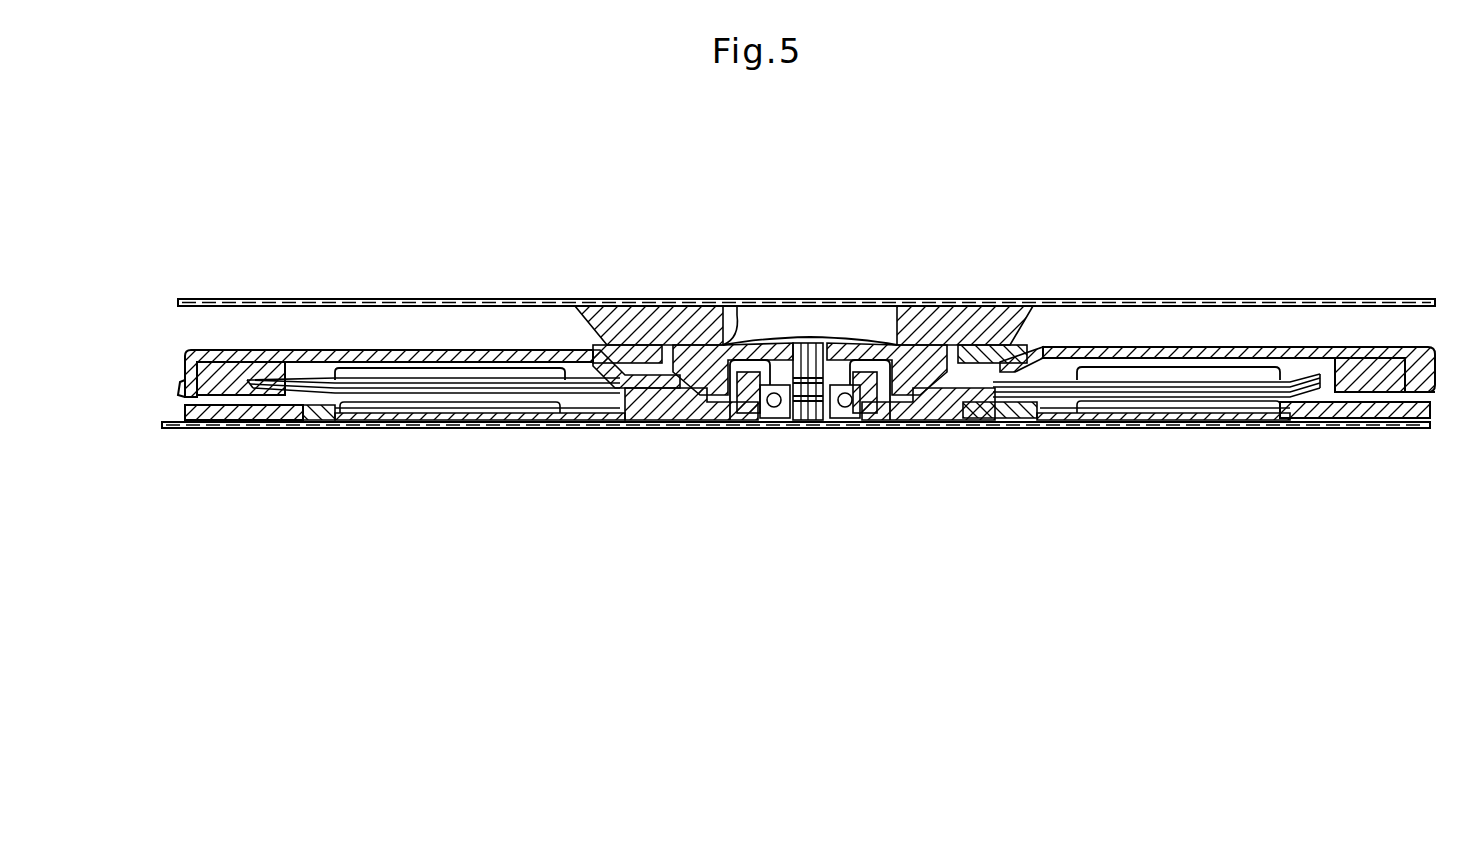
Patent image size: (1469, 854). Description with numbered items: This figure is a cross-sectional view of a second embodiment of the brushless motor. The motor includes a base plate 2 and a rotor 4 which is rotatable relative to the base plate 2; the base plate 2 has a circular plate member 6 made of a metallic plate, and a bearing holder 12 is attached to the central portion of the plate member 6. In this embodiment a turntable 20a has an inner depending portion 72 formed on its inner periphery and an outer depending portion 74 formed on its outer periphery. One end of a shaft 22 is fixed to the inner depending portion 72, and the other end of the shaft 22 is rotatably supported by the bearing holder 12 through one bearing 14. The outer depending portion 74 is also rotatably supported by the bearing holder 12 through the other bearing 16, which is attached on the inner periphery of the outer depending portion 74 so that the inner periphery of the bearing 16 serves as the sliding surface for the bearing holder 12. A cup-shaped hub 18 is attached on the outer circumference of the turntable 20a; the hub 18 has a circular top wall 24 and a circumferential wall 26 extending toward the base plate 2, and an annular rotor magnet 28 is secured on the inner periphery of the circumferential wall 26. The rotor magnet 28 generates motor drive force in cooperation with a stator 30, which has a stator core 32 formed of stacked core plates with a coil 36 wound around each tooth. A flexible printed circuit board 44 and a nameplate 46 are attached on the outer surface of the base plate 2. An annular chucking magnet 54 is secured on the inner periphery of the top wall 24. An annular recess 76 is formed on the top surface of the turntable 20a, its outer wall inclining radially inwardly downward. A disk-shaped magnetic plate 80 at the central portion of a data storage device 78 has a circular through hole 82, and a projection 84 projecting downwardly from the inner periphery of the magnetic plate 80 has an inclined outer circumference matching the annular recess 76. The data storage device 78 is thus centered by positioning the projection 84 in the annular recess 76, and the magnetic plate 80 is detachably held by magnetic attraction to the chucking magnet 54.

The base plate 2 is at (1438, 404).
The rotor 4 is at (1272, 326).
The plate member 6 is at (1395, 428).
The bearing holder 12 is at (676, 424).
The bearing 14 is at (846, 420).
The bearing 16 is at (878, 420).
The hub 18 is at (1190, 342).
The turntable 20a is at (778, 336).
The shaft 22 is at (818, 340).
The top wall 24 is at (420, 350).
The circumferential wall 26 is at (182, 380).
The rotor magnet 28 is at (250, 364).
The stator 30 is at (488, 352).
The stator core 32 is at (430, 416).
The coil 36 is at (378, 421).
The flexible printed circuit board 44 is at (508, 416).
The nameplate 46 is at (1155, 420).
The chucking magnet 54 is at (626, 340).
The inner depending portion 72 is at (852, 340).
The outer depending portion 74 is at (924, 420).
The annular recess 76 is at (933, 332).
The data storage device 78 is at (1116, 296).
The magnetic plate 80 is at (656, 348).
The through hole 82 is at (745, 330).
The projection 84 is at (707, 418).